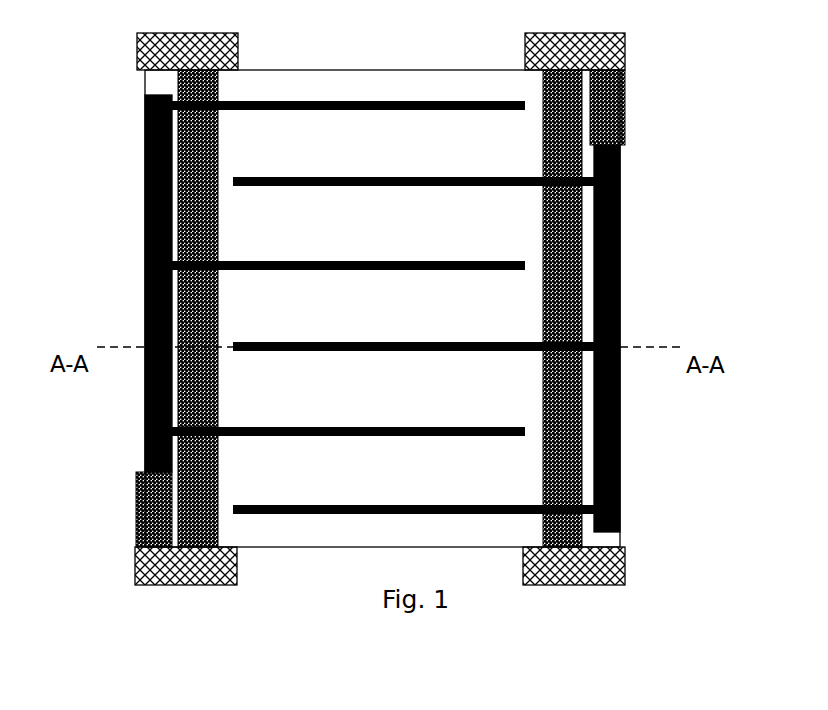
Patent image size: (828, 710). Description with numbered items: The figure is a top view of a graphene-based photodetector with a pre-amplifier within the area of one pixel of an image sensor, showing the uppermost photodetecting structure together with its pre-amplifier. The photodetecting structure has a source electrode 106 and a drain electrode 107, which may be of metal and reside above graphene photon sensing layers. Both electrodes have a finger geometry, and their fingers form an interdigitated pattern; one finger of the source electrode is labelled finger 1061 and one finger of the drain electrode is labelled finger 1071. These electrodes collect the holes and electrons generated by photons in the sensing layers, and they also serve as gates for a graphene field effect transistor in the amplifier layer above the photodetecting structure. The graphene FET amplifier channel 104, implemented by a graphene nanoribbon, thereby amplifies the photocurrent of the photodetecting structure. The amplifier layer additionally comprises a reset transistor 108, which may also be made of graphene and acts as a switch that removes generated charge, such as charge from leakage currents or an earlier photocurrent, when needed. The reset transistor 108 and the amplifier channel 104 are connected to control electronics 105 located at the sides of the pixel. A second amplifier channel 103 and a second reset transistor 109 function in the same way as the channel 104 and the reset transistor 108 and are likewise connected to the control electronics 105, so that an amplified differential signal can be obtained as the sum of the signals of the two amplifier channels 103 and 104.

The second amplifier channel 103 is at (218, 133).
The graphene FET amplifier channel 104 is at (542, 234).
The control electronics 105 is at (137, 46).
The source electrode 106 is at (143, 290).
The drain electrode 107 is at (620, 285).
The reset transistor 108 is at (626, 103).
The second reset transistor 109 is at (135, 508).
The finger of the drain electrode 1071 is at (446, 340).
The finger of the source electrode 1061 is at (330, 426).